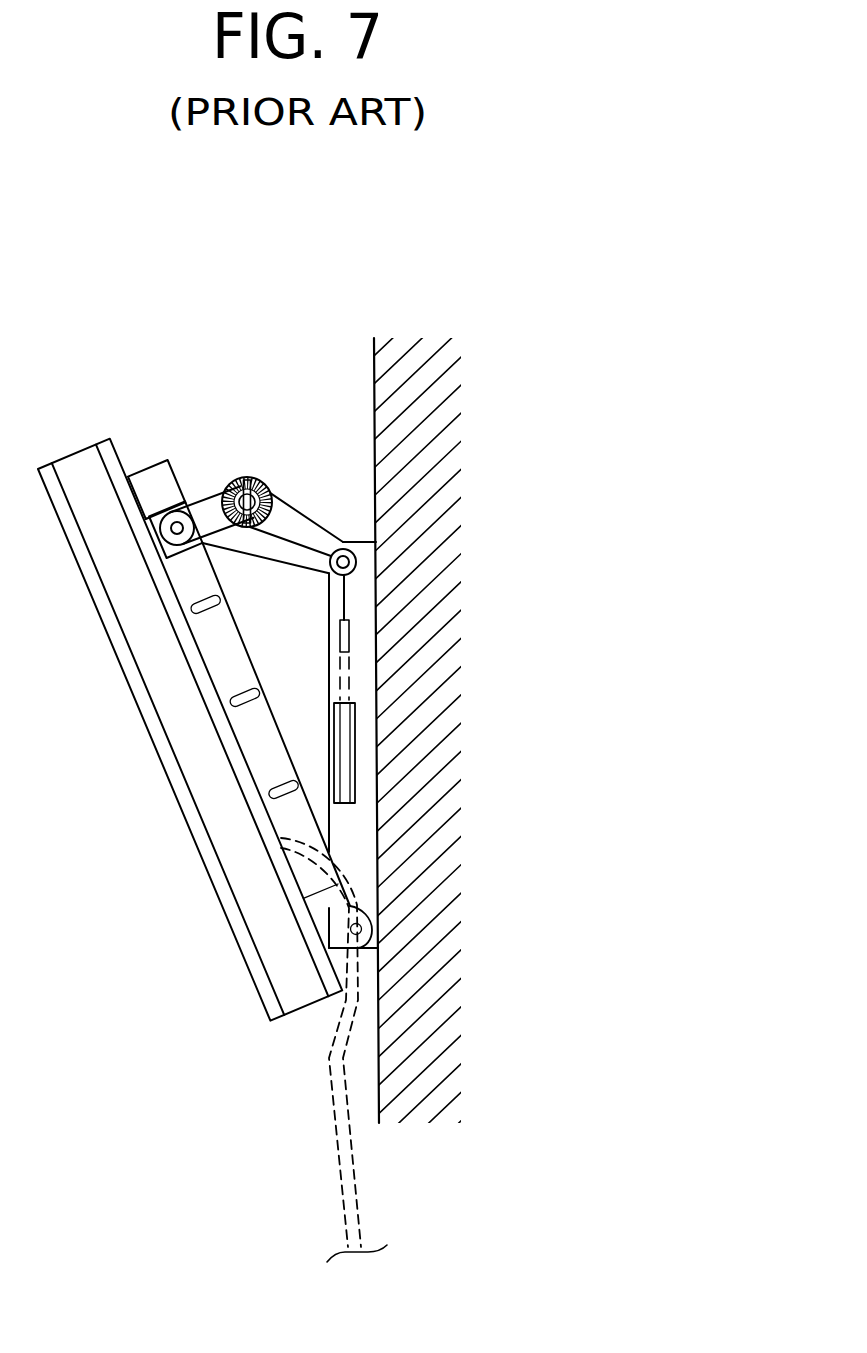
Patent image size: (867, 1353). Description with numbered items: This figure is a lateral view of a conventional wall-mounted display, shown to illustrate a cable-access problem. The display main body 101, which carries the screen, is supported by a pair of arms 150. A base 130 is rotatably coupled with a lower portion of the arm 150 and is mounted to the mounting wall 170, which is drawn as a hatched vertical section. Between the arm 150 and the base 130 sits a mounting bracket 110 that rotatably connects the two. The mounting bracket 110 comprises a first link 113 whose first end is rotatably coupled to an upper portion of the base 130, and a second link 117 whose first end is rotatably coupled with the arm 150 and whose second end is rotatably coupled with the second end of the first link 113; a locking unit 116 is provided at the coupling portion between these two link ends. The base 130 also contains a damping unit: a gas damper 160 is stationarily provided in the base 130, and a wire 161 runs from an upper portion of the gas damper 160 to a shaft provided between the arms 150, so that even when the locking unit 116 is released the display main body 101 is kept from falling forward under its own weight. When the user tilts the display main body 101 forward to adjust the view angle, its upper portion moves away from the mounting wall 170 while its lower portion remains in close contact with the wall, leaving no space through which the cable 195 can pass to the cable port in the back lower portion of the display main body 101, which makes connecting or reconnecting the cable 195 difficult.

The display main body 101 is at (222, 921).
The mounting bracket 110 is at (340, 404).
The first link 113 is at (296, 530).
The locking unit 116 is at (243, 480).
The second link 117 is at (208, 492).
The base 130 is at (362, 625).
The arm 150 is at (152, 477).
The gas damper 160 is at (350, 736).
The wire 161 is at (301, 572).
The mounting wall 170 is at (383, 815).
The cable 195 is at (343, 1132).